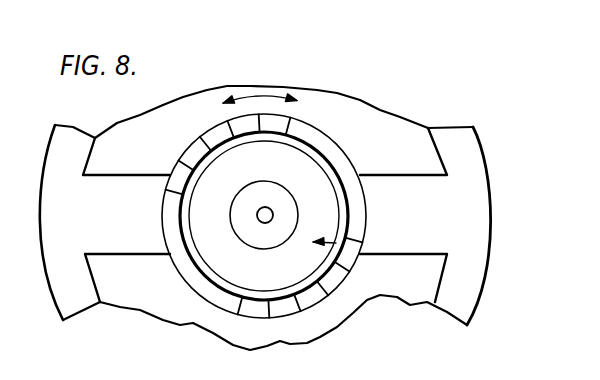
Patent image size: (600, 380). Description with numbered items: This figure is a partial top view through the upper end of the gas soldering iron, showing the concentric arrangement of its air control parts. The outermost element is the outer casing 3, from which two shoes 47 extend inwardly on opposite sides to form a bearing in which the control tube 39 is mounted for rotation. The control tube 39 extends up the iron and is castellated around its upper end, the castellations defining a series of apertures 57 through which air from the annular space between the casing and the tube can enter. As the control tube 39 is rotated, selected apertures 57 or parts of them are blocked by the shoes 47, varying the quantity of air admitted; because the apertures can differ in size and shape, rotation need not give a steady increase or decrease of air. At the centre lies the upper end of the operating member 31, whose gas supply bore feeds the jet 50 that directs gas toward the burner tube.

The outer casing 3 is at (477, 155).
The operating member 31 is at (312, 160).
The control tube 39 is at (192, 273).
The shoes 47 is at (123, 185).
The jet 50 is at (253, 233).
The apertures 57 is at (212, 195).